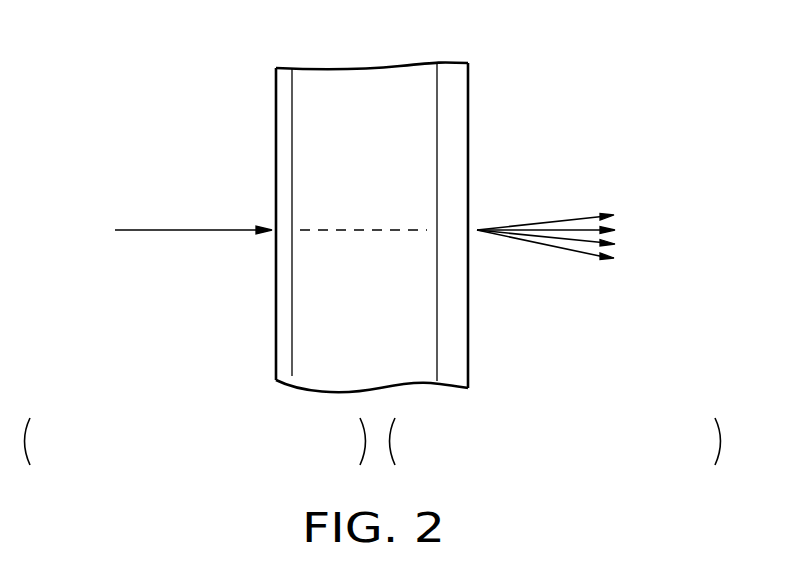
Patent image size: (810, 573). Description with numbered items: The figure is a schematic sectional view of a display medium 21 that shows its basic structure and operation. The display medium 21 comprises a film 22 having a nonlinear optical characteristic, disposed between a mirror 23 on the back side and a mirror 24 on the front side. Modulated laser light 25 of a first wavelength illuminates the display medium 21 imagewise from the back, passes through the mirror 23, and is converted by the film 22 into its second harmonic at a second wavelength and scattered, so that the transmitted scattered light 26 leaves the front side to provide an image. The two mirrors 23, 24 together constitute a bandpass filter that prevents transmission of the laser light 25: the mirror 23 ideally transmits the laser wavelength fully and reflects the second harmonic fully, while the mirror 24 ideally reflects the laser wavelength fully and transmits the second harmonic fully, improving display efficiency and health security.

The display medium 21 is at (500, 119).
The film 22 is at (404, 73).
The mirror 23 is at (283, 312).
The mirror 24 is at (459, 330).
The laser light 25 is at (138, 230).
The scattered light 26 is at (546, 220).